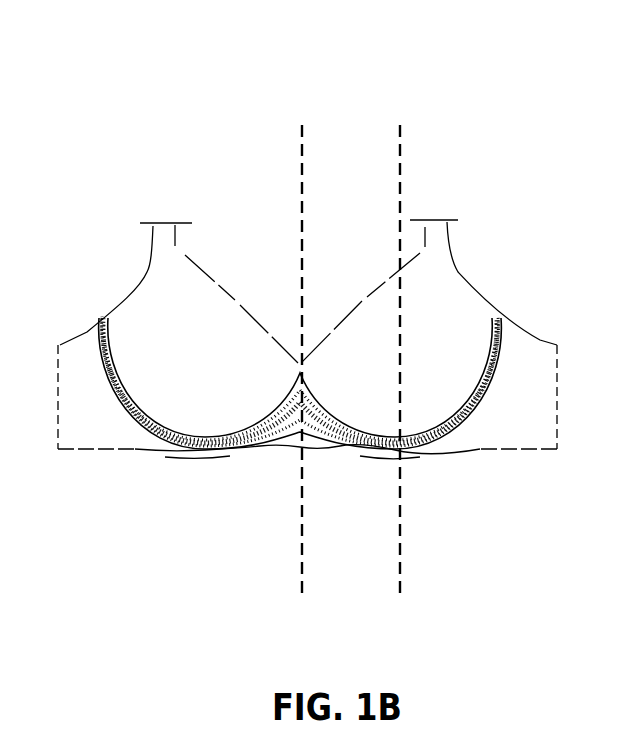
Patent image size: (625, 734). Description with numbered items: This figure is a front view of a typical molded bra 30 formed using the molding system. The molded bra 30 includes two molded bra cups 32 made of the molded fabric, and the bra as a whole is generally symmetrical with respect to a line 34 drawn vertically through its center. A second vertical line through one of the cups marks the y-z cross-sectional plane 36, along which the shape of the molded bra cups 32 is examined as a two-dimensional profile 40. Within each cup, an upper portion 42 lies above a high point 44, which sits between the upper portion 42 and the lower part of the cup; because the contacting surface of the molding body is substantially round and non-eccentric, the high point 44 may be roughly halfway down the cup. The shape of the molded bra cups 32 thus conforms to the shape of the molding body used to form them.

The molded bra 30 is at (253, 106).
The molded bra cups 32 is at (190, 447).
The line 34 is at (298, 195).
The y-z cross-sectional plane 36 is at (400, 153).
The upper portion 42 is at (430, 312).
The high point 44 is at (402, 357).
The two-dimensional profile 40 is at (432, 390).